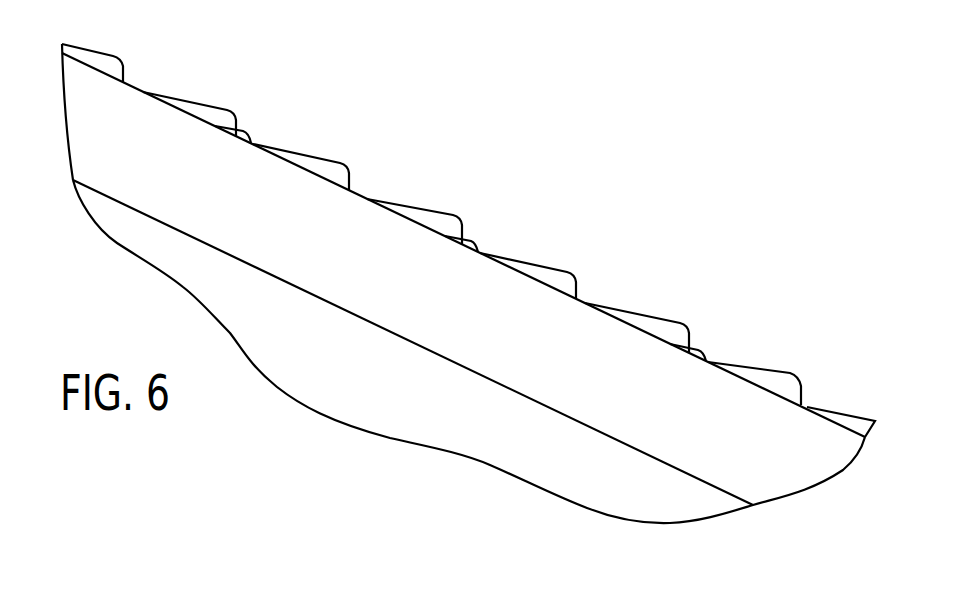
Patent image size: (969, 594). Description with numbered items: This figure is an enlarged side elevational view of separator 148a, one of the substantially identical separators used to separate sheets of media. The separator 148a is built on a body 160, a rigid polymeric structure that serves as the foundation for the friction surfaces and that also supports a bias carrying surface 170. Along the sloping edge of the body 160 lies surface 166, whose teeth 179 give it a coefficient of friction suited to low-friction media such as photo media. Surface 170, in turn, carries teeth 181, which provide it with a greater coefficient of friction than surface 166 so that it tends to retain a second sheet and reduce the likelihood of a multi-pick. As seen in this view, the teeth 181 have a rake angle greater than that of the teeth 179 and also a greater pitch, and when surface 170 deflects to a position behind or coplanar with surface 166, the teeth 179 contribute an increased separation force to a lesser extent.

The separator 148a is at (468, 283).
The body 160 is at (543, 310).
The surfaces 166 is at (477, 237).
The surface 170 is at (463, 217).
The teeth 179 is at (243, 131).
The teeth 181 is at (348, 168).